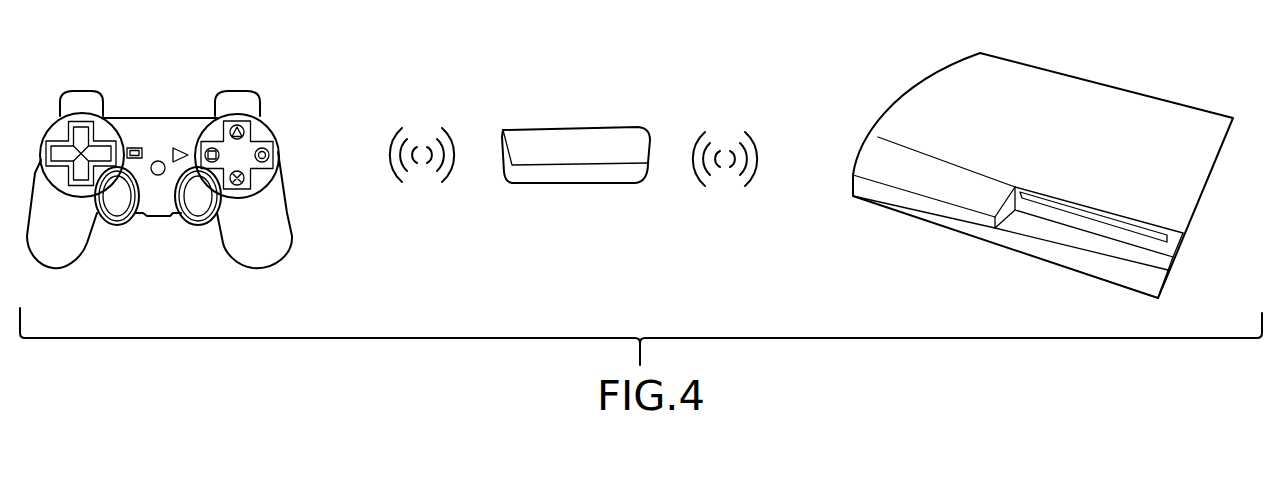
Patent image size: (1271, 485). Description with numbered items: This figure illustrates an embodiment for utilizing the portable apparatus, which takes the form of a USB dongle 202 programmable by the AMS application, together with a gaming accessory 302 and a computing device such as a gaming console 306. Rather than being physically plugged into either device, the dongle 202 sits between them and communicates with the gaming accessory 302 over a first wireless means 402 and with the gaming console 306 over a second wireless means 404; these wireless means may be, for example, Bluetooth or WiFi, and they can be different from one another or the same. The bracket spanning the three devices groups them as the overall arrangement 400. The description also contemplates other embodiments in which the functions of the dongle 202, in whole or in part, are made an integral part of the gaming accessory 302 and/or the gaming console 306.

The gaming accessory 302 is at (88, 91).
The first wireless means 402 is at (388, 150).
The dongle 202 is at (612, 185).
The second wireless means 404 is at (757, 172).
The gaming console 306 is at (1173, 117).
The gaming system 400 is at (603, 302).